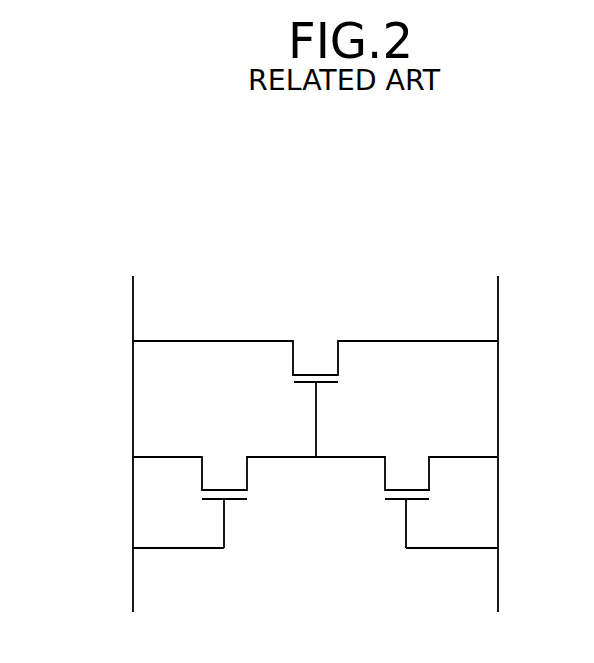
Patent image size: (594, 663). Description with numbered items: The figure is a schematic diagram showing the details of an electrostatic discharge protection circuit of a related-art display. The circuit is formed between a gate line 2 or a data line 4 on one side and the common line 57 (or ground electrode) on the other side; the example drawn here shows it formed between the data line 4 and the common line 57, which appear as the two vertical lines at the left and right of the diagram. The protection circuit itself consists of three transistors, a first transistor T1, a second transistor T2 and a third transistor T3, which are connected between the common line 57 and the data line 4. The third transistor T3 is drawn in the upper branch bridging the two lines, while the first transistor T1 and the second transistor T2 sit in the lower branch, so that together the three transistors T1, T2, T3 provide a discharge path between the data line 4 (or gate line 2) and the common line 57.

The gate line 2 is at (80, 444).
The data line 4 is at (133, 291).
The common line 57 is at (498, 290).
The first transistor T1 is at (441, 516).
The second transistor T2 is at (190, 516).
The third transistor T3 is at (329, 419).